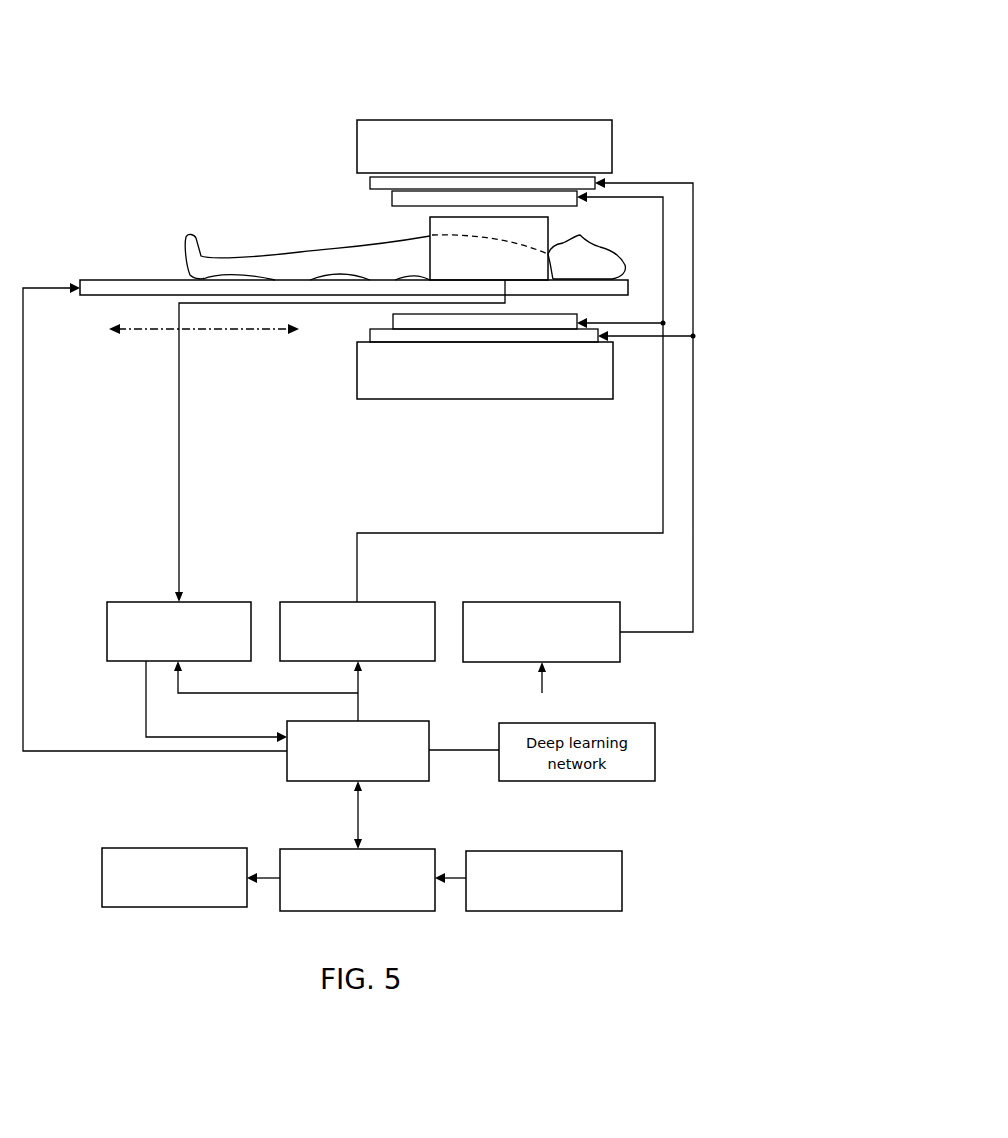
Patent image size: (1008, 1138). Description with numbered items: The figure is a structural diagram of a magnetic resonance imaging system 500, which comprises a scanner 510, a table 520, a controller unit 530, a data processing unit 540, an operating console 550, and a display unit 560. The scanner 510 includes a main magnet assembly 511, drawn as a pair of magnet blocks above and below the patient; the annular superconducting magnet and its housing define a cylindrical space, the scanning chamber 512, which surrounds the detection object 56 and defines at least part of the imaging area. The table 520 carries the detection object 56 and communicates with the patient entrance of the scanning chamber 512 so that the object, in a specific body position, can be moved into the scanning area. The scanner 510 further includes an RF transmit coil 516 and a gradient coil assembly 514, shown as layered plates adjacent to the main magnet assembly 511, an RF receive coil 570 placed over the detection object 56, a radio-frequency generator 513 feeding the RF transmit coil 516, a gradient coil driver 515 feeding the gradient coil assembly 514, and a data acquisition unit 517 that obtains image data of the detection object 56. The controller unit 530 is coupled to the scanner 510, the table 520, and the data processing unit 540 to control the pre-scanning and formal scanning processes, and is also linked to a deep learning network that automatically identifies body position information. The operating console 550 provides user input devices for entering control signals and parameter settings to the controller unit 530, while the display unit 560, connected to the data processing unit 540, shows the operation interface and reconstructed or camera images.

The magnetic resonance imaging system 500 is at (283, 72).
The scanner 510 is at (298, 462).
The main magnet assembly 511 is at (613, 150).
The scanning chamber 512 is at (381, 230).
The radio-frequency generator 513 is at (335, 602).
The gradient coil assembly 514 is at (370, 183).
The gradient coil driver 515 is at (505, 602).
The RF transmit coil 516 is at (392, 197).
The data acquisition unit 517 is at (163, 602).
The table 520 is at (140, 280).
The controller unit 530 is at (430, 733).
The data processing unit 540 is at (315, 849).
The operating console 550 is at (598, 851).
The display unit 560 is at (158, 848).
The RF receive coil 570 is at (548, 236).
The detection object 56 is at (225, 247).